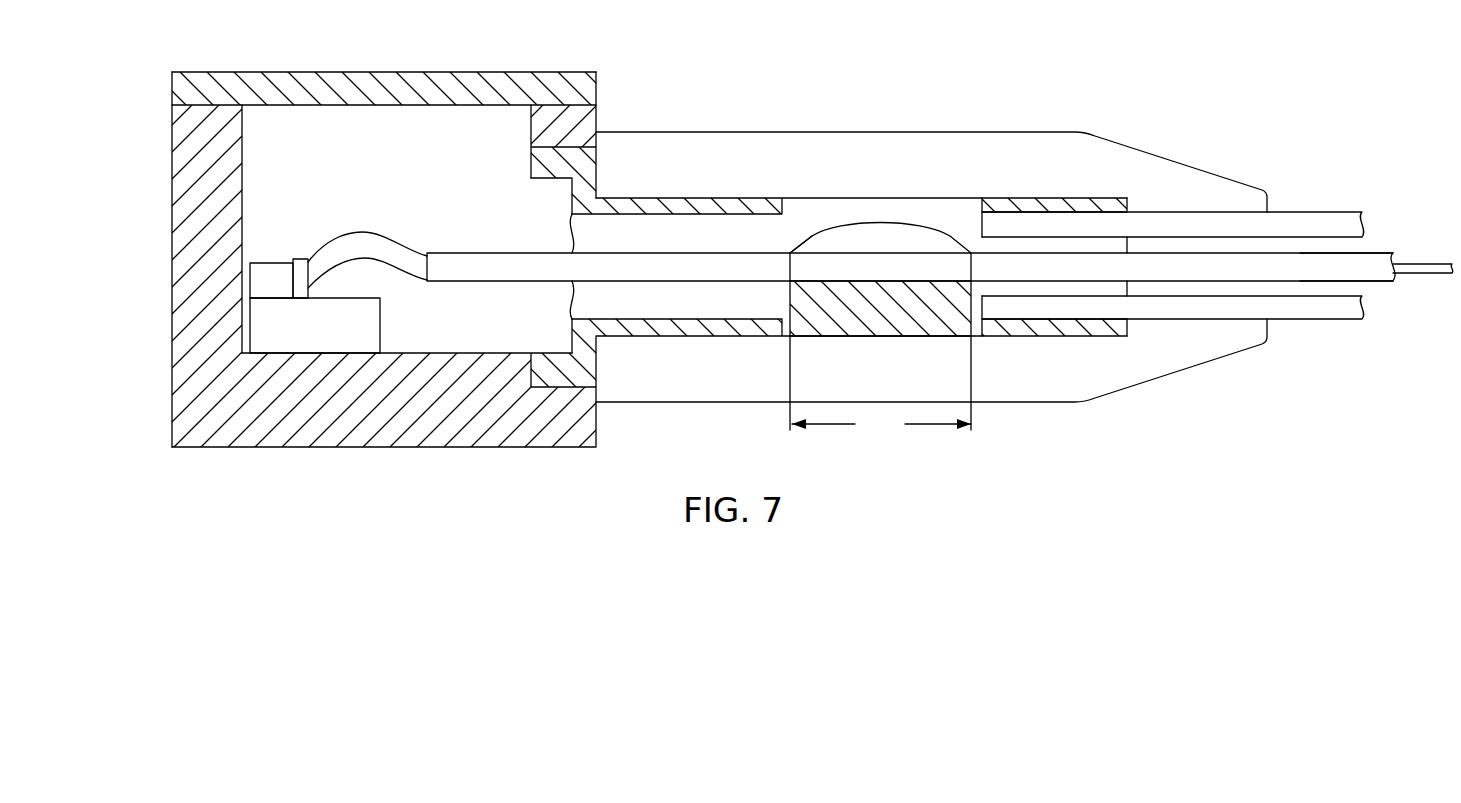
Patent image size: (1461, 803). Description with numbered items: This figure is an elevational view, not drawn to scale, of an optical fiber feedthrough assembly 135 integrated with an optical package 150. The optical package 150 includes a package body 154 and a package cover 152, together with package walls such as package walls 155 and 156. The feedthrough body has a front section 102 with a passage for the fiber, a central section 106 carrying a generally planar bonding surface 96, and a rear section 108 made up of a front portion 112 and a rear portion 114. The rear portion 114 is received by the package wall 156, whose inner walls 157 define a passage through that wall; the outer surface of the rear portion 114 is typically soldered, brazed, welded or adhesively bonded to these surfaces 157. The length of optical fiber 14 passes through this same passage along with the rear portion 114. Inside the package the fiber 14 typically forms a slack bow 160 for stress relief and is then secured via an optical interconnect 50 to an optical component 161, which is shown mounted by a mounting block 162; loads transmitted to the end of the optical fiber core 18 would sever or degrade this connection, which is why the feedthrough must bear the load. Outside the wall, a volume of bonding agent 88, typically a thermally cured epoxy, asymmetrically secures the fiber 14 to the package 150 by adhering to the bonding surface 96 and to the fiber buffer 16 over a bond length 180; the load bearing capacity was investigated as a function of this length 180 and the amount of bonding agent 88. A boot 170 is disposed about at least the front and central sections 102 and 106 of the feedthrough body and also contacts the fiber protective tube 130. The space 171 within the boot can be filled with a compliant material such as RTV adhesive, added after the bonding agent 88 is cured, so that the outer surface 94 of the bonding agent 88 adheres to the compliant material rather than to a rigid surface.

The length of optical fiber 14 is at (479, 253).
The fiber buffer 16 is at (1372, 265).
The optical fiber core 18 is at (1427, 267).
The optical interconnect 50 is at (298, 263).
The volume of bonding agent 88 is at (908, 245).
The outer surface of the volume of bonding agent 94 is at (823, 233).
The bonding surface 96 is at (838, 281).
The front section 102 is at (1077, 203).
The central section 106 is at (893, 317).
The rear section 108 is at (643, 343).
The front portion 112 is at (693, 204).
The rear portion 114 is at (582, 162).
The fiber protective tube 130 is at (1298, 227).
The optical assembly 135 is at (841, 88).
The optical package 150 is at (384, 255).
The package cover 152 is at (579, 93).
The package body 154 is at (307, 422).
The package wall 155 is at (187, 195).
The package wall 156 is at (577, 119).
The inner walls 157 is at (553, 146).
The slack bow 160 is at (382, 228).
The optical component 161 is at (270, 278).
The mounting block 162 is at (360, 322).
The boot 170 is at (897, 150).
The space 171 is at (617, 242).
The length 180 is at (922, 425).